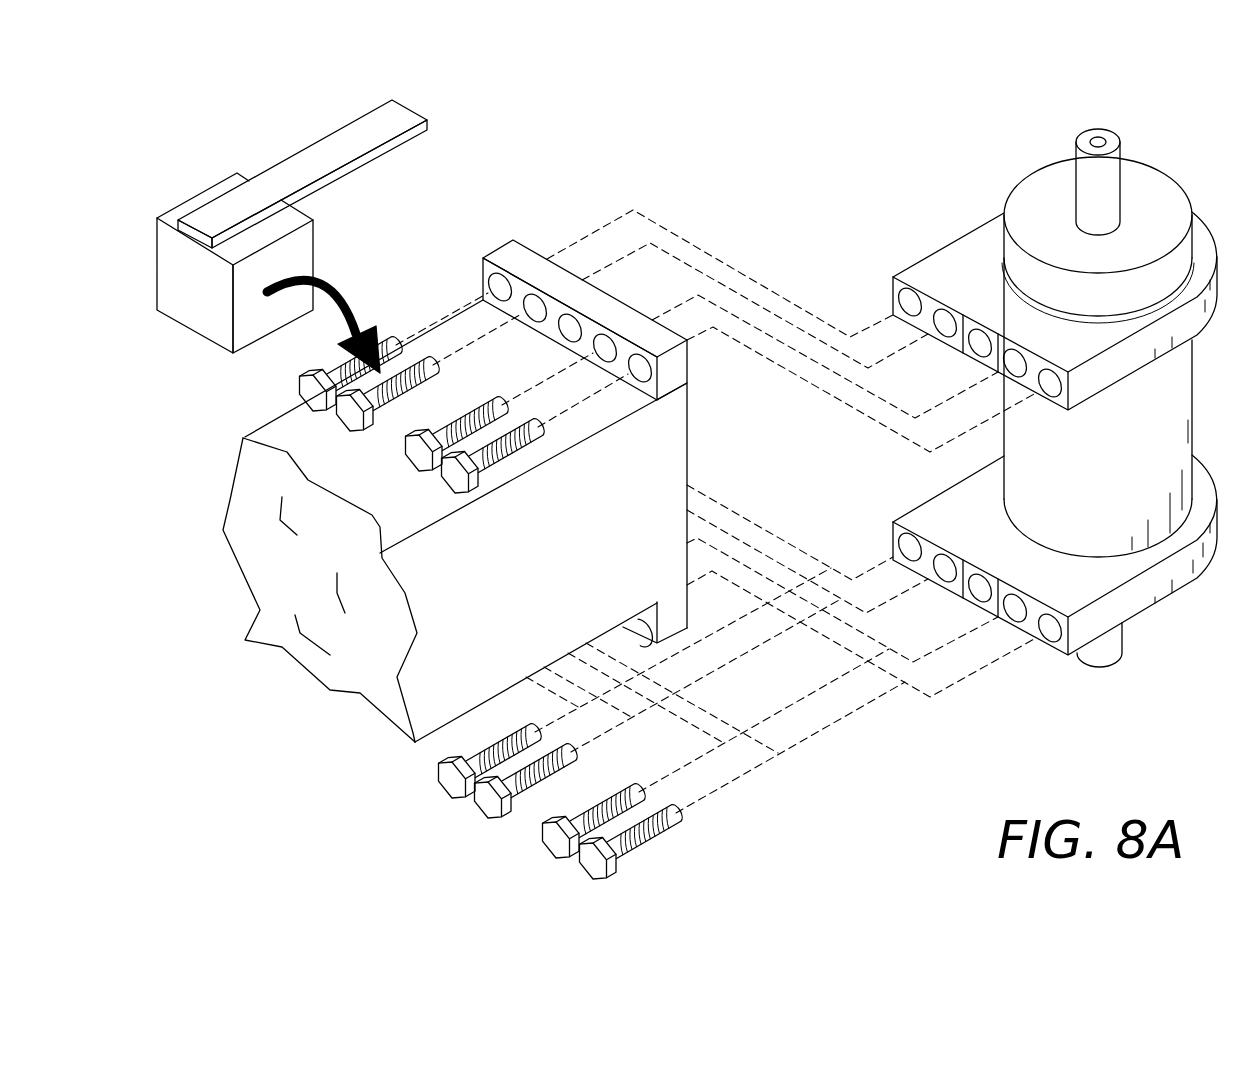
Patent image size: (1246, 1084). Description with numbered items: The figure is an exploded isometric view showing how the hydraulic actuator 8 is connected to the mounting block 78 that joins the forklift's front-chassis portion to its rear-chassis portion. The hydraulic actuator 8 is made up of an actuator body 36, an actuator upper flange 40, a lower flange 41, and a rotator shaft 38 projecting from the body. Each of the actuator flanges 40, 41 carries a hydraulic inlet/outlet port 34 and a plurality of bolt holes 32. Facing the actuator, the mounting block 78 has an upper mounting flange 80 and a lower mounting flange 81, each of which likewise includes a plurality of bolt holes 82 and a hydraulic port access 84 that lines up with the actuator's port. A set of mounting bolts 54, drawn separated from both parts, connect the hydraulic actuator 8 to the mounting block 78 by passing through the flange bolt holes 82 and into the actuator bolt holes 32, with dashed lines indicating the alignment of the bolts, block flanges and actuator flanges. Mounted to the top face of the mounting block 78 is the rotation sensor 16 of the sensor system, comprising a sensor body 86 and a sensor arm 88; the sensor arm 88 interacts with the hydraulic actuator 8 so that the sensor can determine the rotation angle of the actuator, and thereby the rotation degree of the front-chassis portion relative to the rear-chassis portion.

The hydraulic actuator 8 is at (934, 156).
The rotation sensor 16 is at (214, 158).
The bolt holes 32 is at (938, 313).
The hydraulic inlet/outlet port 34 is at (983, 338).
The actuator body 36 is at (1193, 407).
The rotator shaft 38 is at (1112, 147).
The actuator upper flange 40 is at (952, 238).
The lower flange 41 is at (942, 488).
The mounting bolts 54 is at (447, 486).
The mounting block 78 is at (270, 720).
The upper mounting flange 80 is at (494, 256).
The lower mounting flange 81 is at (688, 630).
The bolt holes 82 is at (524, 305).
The hydraulic port access 84 is at (560, 335).
The sensor body 86 is at (190, 313).
The sensor arm 88 is at (400, 130).